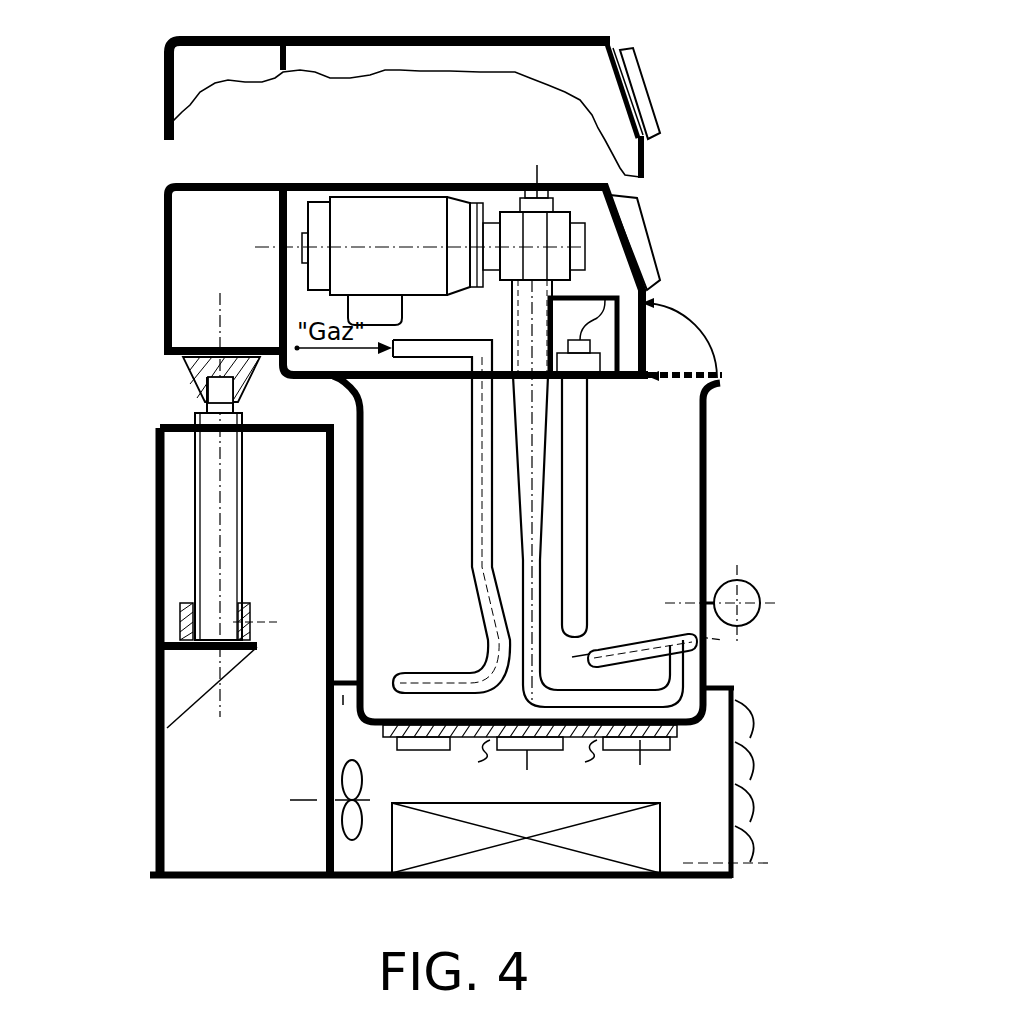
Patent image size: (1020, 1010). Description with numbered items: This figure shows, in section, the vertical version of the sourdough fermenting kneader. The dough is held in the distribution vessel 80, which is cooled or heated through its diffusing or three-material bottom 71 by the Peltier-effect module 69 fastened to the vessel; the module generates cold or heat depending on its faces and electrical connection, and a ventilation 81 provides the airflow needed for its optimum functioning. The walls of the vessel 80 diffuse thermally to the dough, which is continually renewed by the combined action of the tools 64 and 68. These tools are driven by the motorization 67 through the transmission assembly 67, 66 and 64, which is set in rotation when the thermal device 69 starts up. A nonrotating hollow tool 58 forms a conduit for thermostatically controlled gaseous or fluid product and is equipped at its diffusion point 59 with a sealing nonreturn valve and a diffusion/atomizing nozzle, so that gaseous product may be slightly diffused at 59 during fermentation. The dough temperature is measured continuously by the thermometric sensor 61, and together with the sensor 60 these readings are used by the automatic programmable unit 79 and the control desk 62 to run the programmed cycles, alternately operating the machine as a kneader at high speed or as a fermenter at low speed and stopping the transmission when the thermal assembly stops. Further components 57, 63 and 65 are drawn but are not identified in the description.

The hatched cone coupling 57 is at (187, 360).
The nonrotating hollow tool 58 is at (482, 465).
The diffusion point 59 is at (397, 680).
The sensor 60 is at (575, 545).
The thermometric sensor 61 is at (745, 618).
The control desk 62 is at (641, 97).
The piston cylinder 63 is at (205, 510).
The tool 64 is at (542, 440).
The partition plate 65 is at (693, 372).
The transmission assembly element 66 is at (558, 233).
The motorization 67 is at (360, 233).
The tool 68 is at (165, 63).
The Peltier-effect module 69 is at (647, 740).
The diffusing or three-material bottom 71 is at (383, 737).
The automatic programmable unit 79 is at (613, 848).
The vessel 80 is at (358, 595).
The ventilation 81 is at (340, 820).